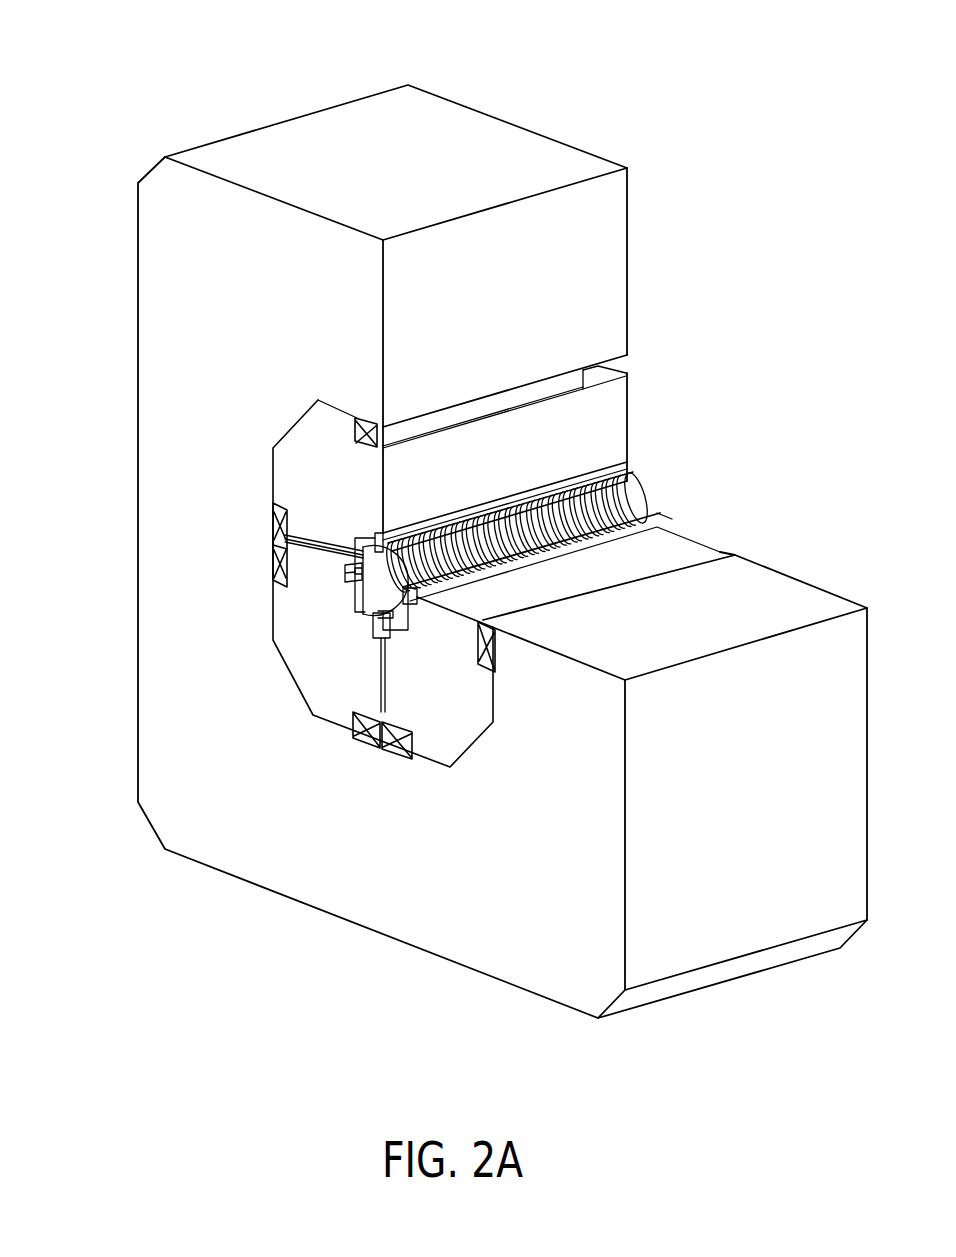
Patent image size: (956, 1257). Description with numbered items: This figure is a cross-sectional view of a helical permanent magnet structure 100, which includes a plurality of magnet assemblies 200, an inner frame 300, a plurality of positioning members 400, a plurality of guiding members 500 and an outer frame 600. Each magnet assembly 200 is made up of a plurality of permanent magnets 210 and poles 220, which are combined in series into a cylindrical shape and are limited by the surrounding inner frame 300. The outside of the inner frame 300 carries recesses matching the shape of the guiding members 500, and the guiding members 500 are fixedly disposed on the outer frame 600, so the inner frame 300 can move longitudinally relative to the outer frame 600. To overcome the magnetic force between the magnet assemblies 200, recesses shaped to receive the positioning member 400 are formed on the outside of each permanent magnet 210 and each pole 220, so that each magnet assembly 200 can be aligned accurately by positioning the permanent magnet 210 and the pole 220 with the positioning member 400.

The helical permanent magnet structure 100 is at (100, 24).
The outer frame 600 is at (140, 272).
The inner frame 300 is at (317, 662).
The magnet assembly 200 is at (80, 450).
The permanent magnet 210 is at (283, 533).
The pole 220 is at (408, 548).
The positioning member 400 is at (350, 580).
The guiding member 500 is at (273, 568).